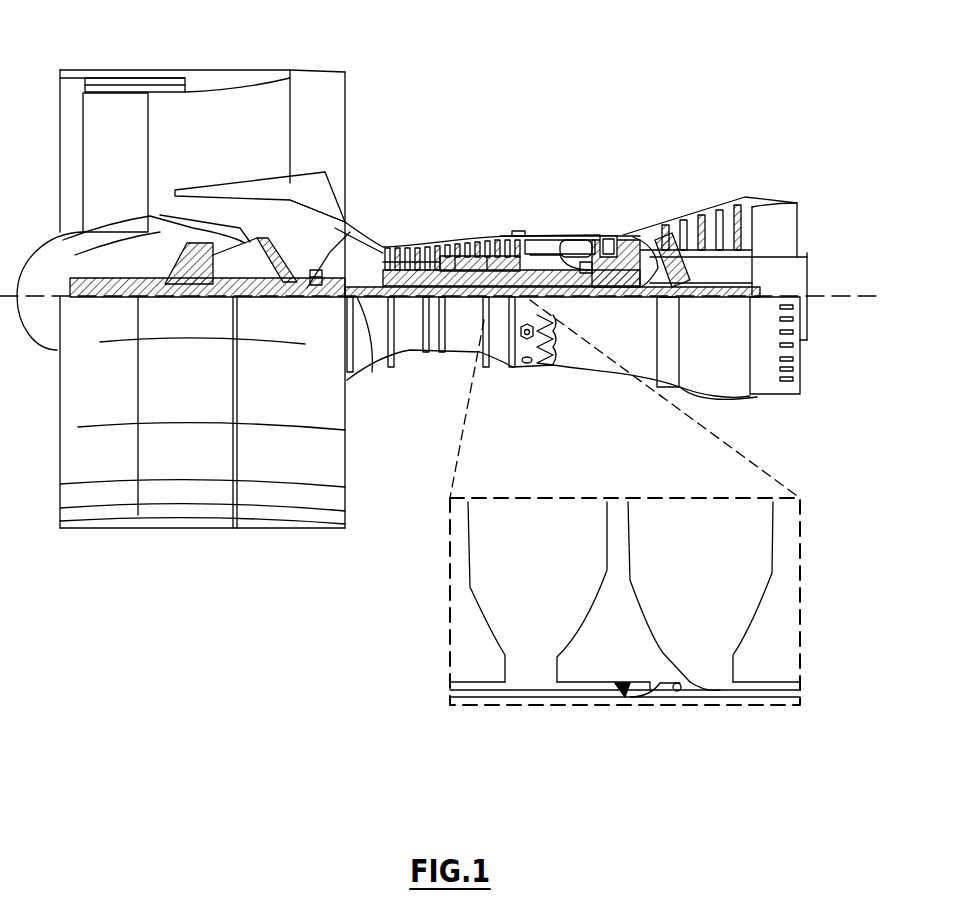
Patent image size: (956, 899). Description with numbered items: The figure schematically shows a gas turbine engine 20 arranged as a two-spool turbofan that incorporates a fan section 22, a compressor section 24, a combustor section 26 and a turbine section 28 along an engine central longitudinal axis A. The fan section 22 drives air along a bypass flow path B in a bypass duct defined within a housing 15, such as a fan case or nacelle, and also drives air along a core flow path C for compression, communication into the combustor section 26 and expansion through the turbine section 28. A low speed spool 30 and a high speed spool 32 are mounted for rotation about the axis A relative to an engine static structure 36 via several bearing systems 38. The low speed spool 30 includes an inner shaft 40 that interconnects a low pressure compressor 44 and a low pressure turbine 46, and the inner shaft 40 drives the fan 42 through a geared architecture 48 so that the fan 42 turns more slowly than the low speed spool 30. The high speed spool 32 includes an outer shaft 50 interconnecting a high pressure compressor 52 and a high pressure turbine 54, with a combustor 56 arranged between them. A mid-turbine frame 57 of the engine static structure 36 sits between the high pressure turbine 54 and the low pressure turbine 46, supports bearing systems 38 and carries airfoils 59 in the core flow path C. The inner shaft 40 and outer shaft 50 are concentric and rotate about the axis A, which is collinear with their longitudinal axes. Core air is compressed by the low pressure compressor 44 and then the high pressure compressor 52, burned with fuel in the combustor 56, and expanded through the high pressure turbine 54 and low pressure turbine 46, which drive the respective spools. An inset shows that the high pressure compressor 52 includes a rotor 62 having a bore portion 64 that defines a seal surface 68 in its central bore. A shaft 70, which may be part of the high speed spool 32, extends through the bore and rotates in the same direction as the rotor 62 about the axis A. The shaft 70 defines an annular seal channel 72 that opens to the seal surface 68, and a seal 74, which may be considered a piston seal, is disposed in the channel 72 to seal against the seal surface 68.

The gas turbine engine 20 is at (562, 112).
The fan section 22 is at (148, 68).
The housing 15 is at (202, 78).
The fan 42 is at (115, 162).
The bypass flow path B is at (178, 133).
The core flow path C is at (203, 215).
The compressor section 24 is at (383, 220).
The combustor section 26 is at (558, 222).
The turbine section 28 is at (688, 172).
The low speed spool 30 is at (483, 320).
The high speed spool 32 is at (502, 270).
The engine static structure 36 is at (500, 363).
The bearing systems 38 is at (312, 293).
The inner shaft 40 is at (362, 300).
The low pressure compressor 44 is at (290, 213).
The low pressure turbine 46 is at (710, 217).
The geared architecture 48 is at (207, 293).
The outer shaft 50 is at (567, 293).
The high pressure compressor 52 is at (455, 238).
The high pressure turbine 54 is at (607, 236).
The combustor 56 is at (560, 248).
The mid-turbine frame 57 is at (644, 222).
The airfoils 59 is at (667, 270).
The engine central longitudinal axis A is at (870, 296).
The rotor 62 is at (607, 565).
The bore portion 64 is at (557, 667).
The seal surface 68 is at (648, 683).
The shaft 70 is at (455, 695).
The annular seal channel 72 is at (677, 692).
The seal 74 is at (667, 695).